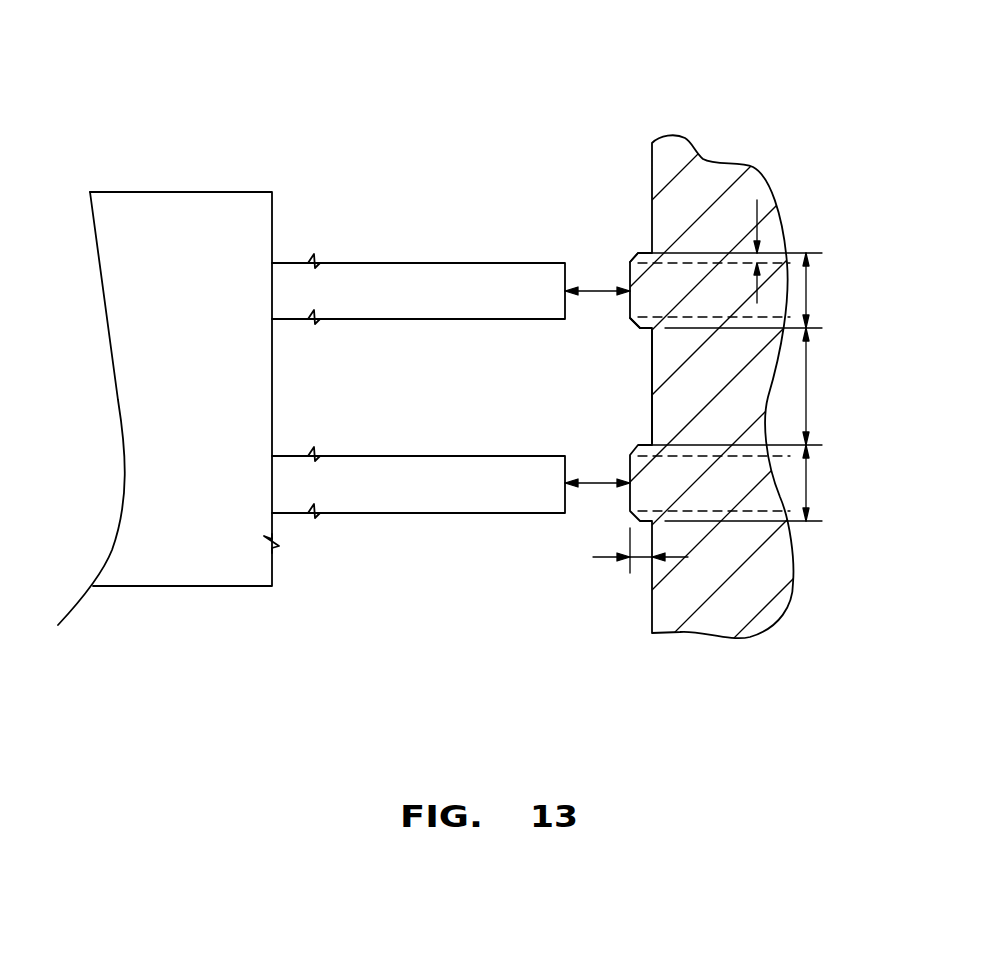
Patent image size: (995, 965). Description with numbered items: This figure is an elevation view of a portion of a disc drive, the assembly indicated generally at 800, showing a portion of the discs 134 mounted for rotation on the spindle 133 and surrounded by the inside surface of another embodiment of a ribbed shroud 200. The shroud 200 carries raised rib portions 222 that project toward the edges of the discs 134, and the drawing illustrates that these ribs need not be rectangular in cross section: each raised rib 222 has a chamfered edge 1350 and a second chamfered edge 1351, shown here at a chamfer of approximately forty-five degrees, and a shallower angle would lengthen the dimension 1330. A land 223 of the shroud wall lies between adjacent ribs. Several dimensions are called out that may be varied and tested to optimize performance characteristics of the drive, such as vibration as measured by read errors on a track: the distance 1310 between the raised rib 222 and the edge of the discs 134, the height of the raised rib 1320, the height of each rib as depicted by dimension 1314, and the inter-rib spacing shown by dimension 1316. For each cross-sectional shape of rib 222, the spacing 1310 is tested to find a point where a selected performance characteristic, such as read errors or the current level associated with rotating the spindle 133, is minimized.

The connector assembly 800 is at (760, 76).
The ribbed shroud 200 is at (684, 143).
The spindle 133 is at (92, 192).
The discs 134 is at (383, 320).
The raised rib portion 222 is at (628, 308).
The land between recesses 223 is at (652, 412).
The distance between raised rib and discs 1310 is at (597, 291).
The rib height dimension 1314 is at (808, 295).
The inter-rib spacing dimension 1316 is at (808, 405).
The height of the raised rib 1320 is at (643, 565).
The chamfer dimension 1330 is at (757, 200).
The chamfered edge 1350 is at (630, 258).
The second chamfered edge 1351 is at (636, 326).